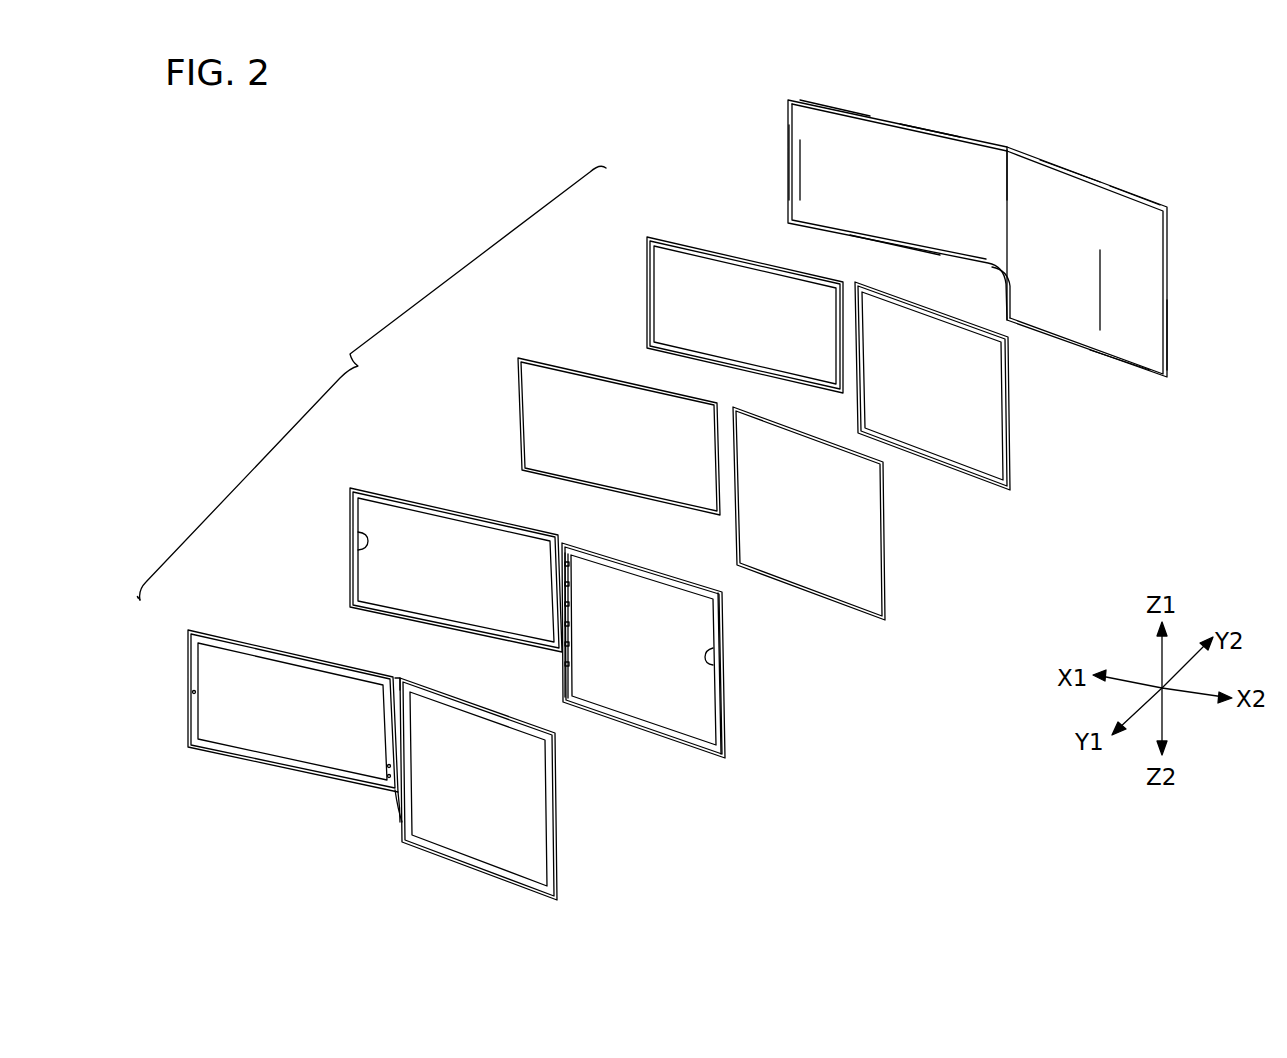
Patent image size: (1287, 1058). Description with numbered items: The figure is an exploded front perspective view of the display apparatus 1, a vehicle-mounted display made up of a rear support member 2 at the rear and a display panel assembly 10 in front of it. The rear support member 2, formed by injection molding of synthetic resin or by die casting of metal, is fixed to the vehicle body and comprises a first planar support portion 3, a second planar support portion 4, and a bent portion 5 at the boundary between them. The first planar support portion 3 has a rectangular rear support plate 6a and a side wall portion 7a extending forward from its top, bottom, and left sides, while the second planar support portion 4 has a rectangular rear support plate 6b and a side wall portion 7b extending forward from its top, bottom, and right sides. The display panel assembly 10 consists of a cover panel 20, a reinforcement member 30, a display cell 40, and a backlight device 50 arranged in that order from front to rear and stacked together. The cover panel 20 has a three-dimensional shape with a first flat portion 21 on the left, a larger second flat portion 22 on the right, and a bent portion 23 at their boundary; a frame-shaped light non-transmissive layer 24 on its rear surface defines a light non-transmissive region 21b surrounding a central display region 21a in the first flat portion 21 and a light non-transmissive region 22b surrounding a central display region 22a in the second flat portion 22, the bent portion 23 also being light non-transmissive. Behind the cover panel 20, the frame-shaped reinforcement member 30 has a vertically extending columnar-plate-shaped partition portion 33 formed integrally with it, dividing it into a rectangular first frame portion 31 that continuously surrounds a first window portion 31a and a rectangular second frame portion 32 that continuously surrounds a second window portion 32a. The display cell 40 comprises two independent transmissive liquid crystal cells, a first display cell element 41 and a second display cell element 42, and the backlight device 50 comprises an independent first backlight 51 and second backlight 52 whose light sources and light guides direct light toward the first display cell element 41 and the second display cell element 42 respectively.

The display apparatus 1 is at (830, 785).
The rear support member 2 is at (1182, 228).
The first planar support portion 3 is at (915, 122).
The second planar support portion 4 is at (1077, 166).
The bent portion 5 is at (1004, 140).
The rear support plate 6a is at (815, 178).
The rear support plate 6b is at (1138, 284).
The side wall portion 7a is at (836, 108).
The side wall portion 7b is at (1128, 190).
The display panel assembly 10 is at (371, 383).
The cover panel 20 is at (418, 765).
The first flat portion 21 is at (210, 750).
The display region 21a is at (234, 680).
The light non-transmissive region 21b is at (288, 660).
The second flat portion 22 is at (432, 855).
The display region 22a is at (510, 790).
The light non-transmissive region 22b is at (526, 885).
The bent portion 23 is at (401, 678).
The light non-transmissive layer 24 is at (353, 775).
The reinforcement member 30 is at (539, 597).
The first frame portion 31 is at (420, 498).
The first window portion 31a is at (358, 541).
The second frame portion 32 is at (662, 576).
The second window portion 32a is at (718, 656).
The partition portion 33 is at (550, 594).
The display cell 40 is at (746, 465).
The first display cell element 41 is at (548, 378).
The second display cell element 42 is at (870, 495).
The backlight device 50 is at (847, 395).
The first backlight 51 is at (688, 266).
The second backlight 52 is at (985, 465).